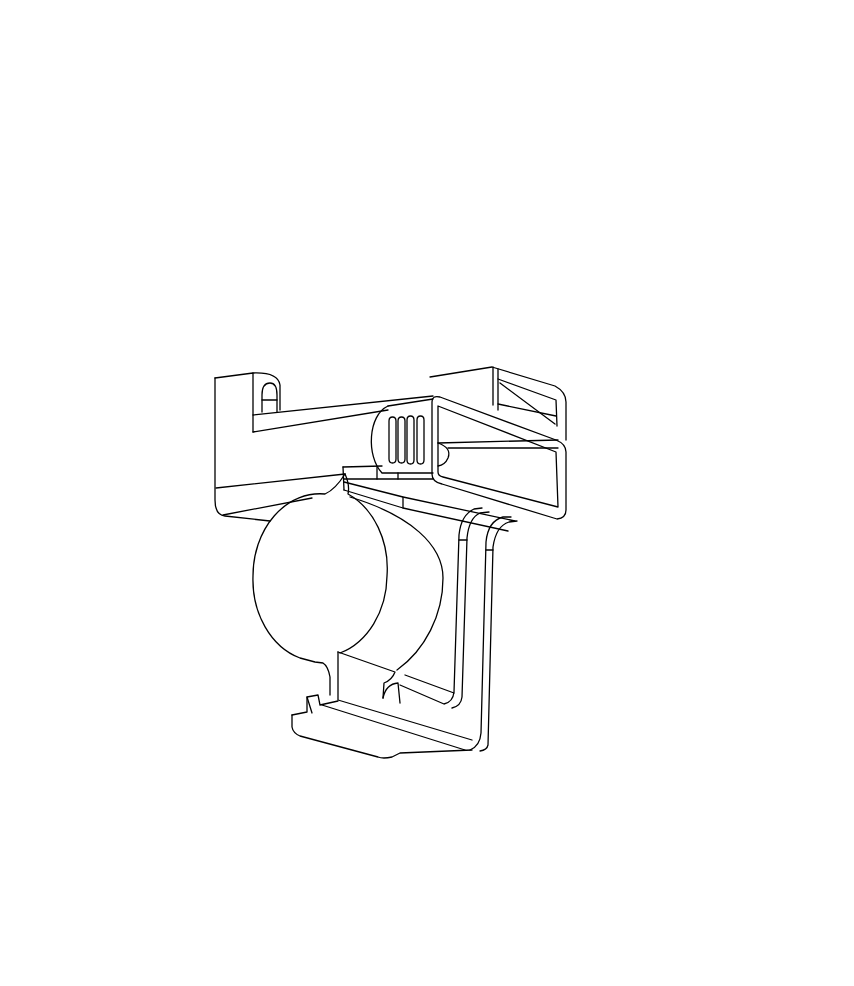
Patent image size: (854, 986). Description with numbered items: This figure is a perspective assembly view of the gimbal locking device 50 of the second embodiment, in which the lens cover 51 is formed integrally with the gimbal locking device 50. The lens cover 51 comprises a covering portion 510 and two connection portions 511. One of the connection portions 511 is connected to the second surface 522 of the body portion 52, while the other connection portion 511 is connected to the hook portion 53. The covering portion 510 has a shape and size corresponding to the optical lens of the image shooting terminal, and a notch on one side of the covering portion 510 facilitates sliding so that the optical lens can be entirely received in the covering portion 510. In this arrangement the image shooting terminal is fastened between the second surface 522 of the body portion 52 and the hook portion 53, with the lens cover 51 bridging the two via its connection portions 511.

The gimbal locking device 50 is at (404, 42).
The lens cover 51 is at (648, 542).
The covering portion 510 is at (333, 562).
The connection portions 511 is at (418, 517).
The body portion 52 is at (320, 458).
The second surface 522 is at (270, 523).
The hook portion 53 is at (392, 693).